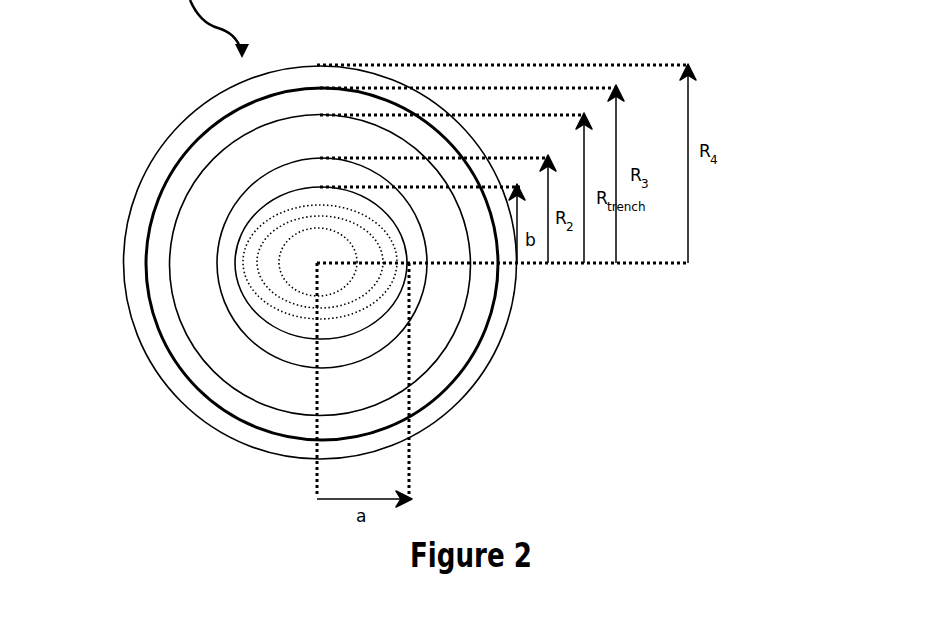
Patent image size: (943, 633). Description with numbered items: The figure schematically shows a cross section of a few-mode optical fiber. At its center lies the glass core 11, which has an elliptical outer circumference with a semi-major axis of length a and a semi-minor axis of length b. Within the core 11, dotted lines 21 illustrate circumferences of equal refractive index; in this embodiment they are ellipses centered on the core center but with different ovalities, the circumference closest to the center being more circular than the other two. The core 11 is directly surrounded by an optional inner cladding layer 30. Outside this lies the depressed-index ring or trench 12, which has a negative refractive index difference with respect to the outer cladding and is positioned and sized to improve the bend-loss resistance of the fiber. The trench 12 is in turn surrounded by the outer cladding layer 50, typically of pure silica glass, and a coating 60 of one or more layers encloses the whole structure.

The glass core 11 is at (280, 211).
The inner cladding layer 30 is at (230, 232).
The depressed-index ring 12 is at (190, 246).
The outer cladding layer 50 is at (167, 303).
The coating 60 is at (167, 367).
The circumferences of equal refractive index 21 is at (347, 290).